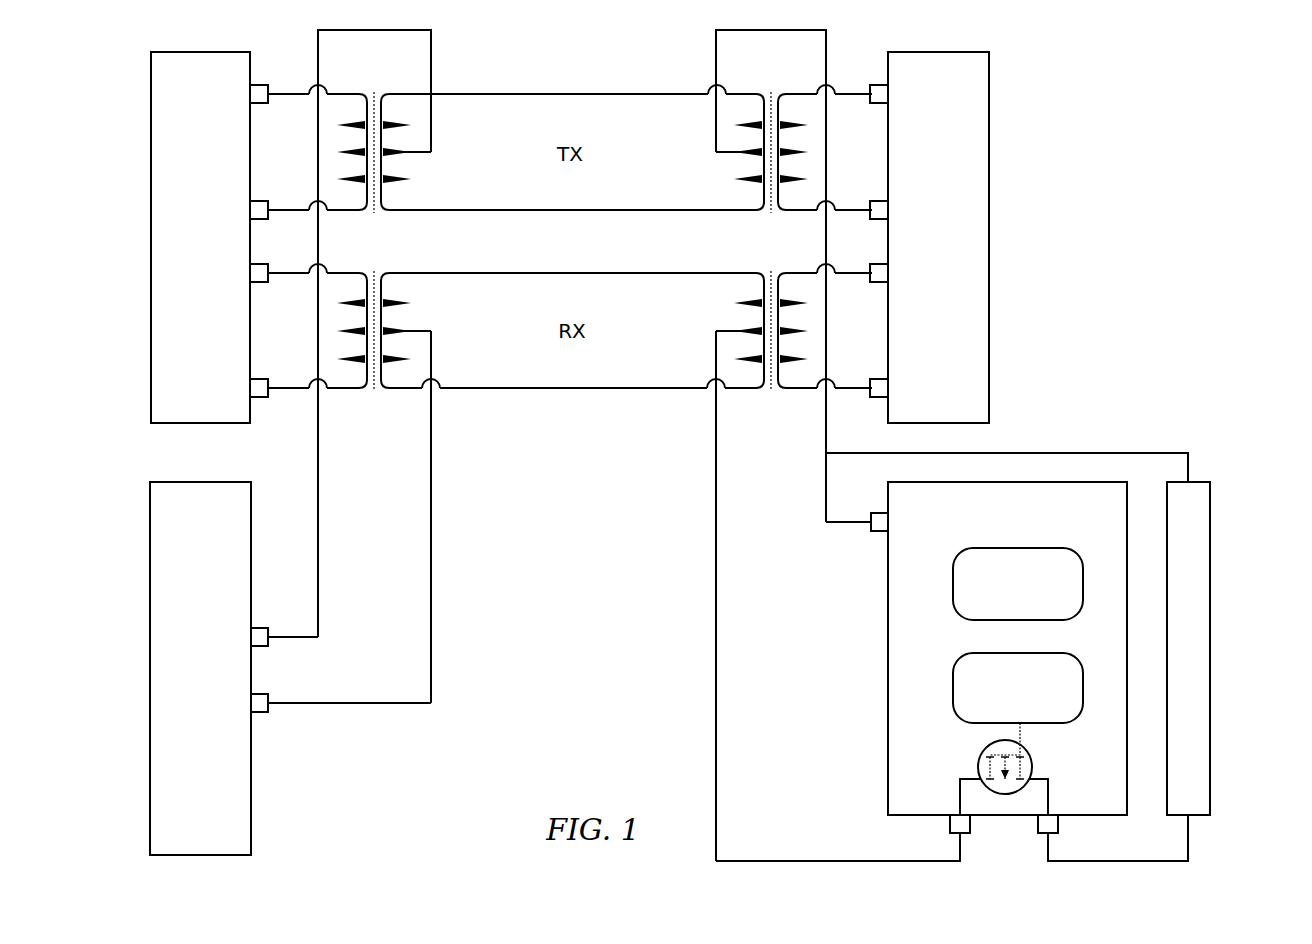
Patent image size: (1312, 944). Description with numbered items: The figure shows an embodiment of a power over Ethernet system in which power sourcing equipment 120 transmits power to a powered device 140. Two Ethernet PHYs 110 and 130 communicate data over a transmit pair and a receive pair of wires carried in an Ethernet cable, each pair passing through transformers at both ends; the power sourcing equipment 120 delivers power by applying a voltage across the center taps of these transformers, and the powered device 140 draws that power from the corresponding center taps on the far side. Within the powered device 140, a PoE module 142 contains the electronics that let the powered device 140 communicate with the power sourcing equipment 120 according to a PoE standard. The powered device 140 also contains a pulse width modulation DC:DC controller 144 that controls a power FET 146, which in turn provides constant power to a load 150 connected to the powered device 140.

The Ethernet PHY 110 is at (151, 238).
The power sourcing equipment (PSE) 120 is at (150, 668).
The Ethernet PHY 130 is at (989, 238).
The powered device (PD) 140 is at (888, 640).
The PoE module 142 is at (986, 548).
The pulse width modulation (PWM) DC:DC controller 144 is at (968, 653).
The power FET 146 is at (981, 771).
The load 150 is at (1210, 638).